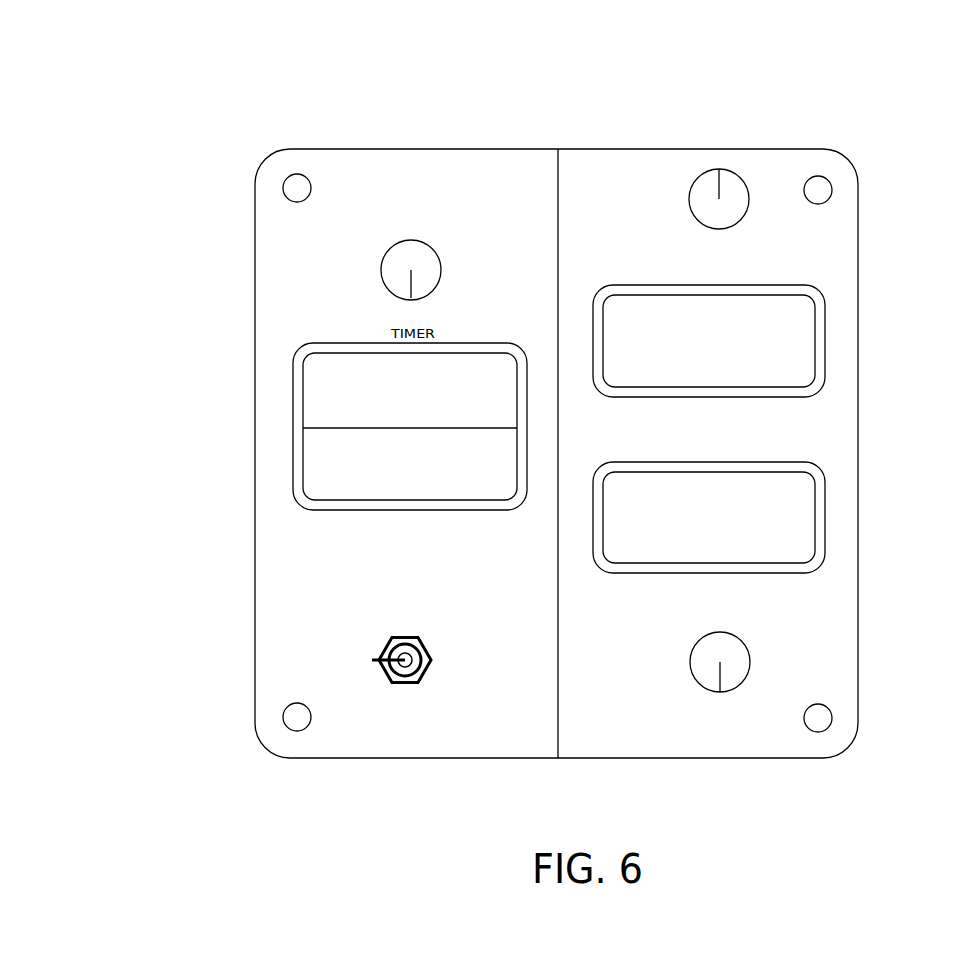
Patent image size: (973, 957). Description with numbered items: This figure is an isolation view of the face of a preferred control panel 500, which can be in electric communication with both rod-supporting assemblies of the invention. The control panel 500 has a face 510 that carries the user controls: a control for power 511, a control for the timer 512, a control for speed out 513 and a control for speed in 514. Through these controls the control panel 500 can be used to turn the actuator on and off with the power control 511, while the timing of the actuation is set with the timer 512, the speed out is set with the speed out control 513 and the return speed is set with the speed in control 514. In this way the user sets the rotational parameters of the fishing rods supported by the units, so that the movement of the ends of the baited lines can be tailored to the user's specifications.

The control panel 500 is at (679, 126).
The face 510 is at (643, 194).
The power control 511 is at (389, 686).
The timer control 512 is at (381, 270).
The speed out control 513 is at (748, 197).
The speed in control 514 is at (750, 662).